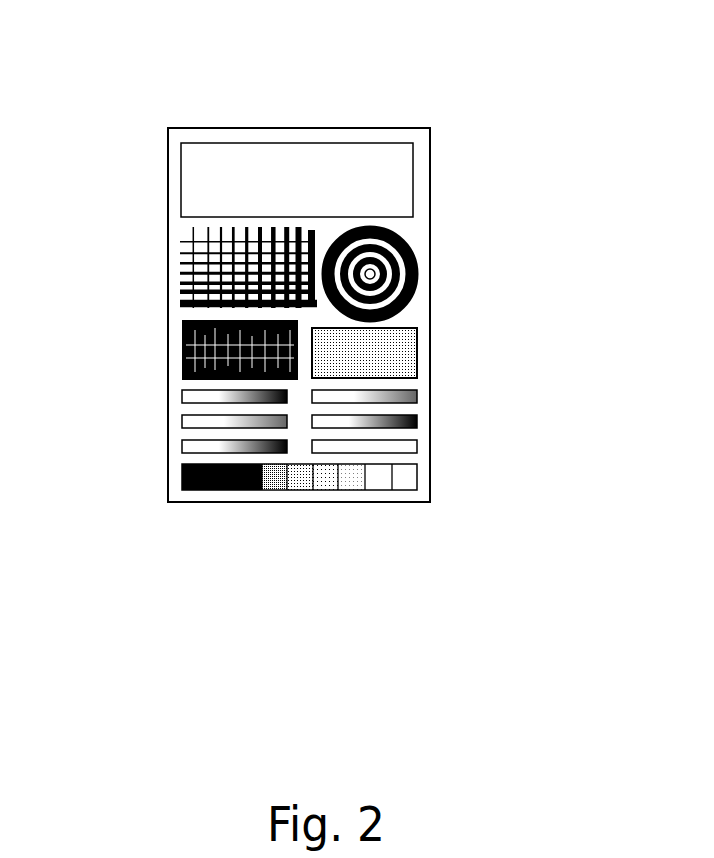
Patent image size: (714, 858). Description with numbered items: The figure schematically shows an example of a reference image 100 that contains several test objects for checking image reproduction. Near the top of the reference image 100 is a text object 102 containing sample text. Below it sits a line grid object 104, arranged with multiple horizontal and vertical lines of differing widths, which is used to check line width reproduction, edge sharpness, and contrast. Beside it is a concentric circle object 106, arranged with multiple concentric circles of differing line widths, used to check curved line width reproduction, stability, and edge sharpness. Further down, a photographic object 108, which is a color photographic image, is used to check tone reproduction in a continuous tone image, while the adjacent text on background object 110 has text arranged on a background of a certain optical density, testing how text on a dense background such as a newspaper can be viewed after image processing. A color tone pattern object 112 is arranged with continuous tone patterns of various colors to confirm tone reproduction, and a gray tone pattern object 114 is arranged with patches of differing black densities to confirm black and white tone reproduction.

The reference image 100 is at (396, 116).
The text object 102 is at (415, 179).
The line grid object 104 is at (177, 248).
The concentric circle object 106 is at (413, 238).
The photographic object 108 is at (183, 350).
The text on background object 110 is at (417, 353).
The color tone pattern object 112 is at (440, 460).
The gray tone pattern object 114 is at (417, 477).